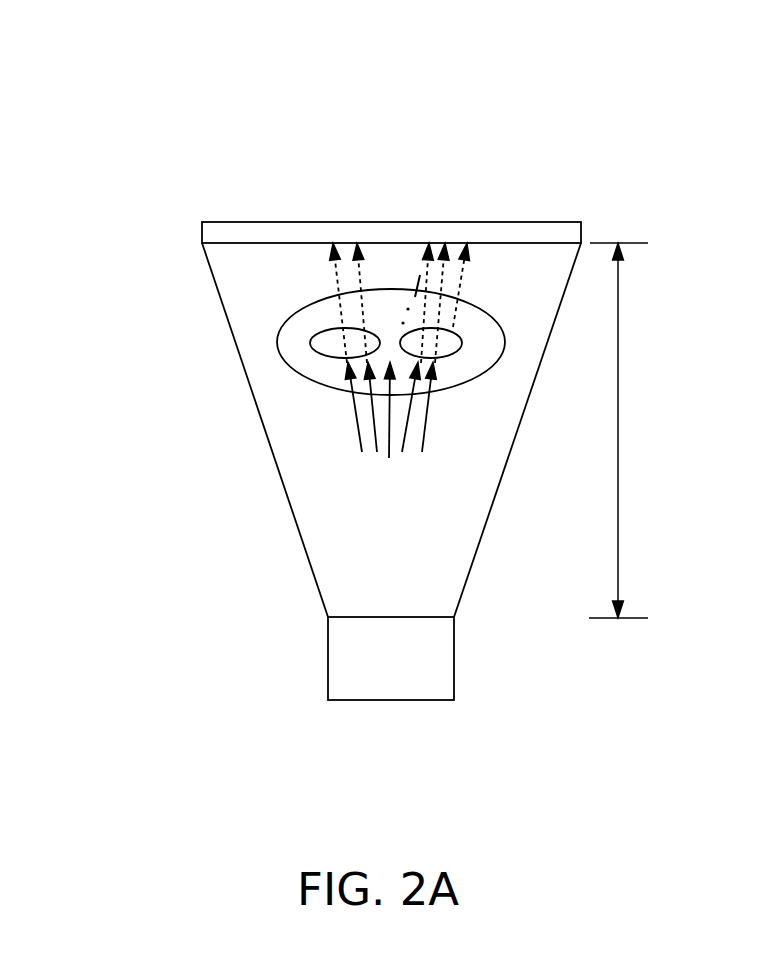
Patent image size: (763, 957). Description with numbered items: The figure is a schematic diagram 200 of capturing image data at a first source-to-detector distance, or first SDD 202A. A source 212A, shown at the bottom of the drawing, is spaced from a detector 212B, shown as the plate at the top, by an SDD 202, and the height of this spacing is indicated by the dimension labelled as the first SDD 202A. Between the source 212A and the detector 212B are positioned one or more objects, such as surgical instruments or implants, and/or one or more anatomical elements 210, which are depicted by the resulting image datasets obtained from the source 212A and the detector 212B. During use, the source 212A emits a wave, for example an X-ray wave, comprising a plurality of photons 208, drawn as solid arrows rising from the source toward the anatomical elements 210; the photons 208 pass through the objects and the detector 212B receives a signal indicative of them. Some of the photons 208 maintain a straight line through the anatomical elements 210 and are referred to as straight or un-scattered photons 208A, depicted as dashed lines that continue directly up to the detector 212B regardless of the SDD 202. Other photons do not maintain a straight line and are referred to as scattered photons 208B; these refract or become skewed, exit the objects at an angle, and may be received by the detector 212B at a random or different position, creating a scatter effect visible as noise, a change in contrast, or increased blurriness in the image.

The schematic diagram 200 is at (170, 129).
The SDD 202 is at (657, 394).
The first SDD 202A is at (619, 473).
The plurality of photons 208 is at (326, 430).
The un-scattered photons 208A is at (303, 243).
The scattered photons 208B is at (369, 314).
The anatomical elements 210 is at (248, 346).
The source 212A is at (453, 680).
The detector 212B is at (581, 232).